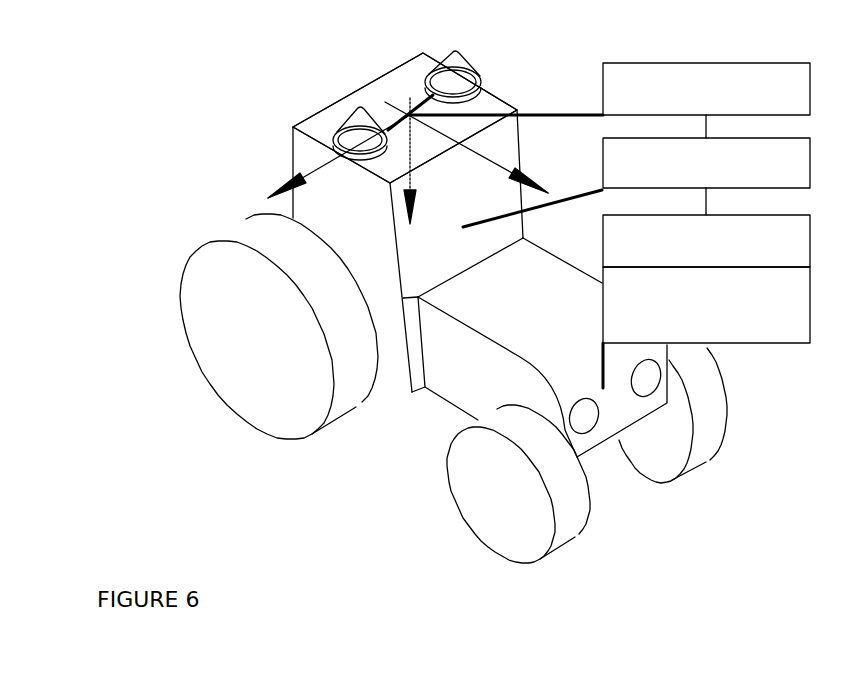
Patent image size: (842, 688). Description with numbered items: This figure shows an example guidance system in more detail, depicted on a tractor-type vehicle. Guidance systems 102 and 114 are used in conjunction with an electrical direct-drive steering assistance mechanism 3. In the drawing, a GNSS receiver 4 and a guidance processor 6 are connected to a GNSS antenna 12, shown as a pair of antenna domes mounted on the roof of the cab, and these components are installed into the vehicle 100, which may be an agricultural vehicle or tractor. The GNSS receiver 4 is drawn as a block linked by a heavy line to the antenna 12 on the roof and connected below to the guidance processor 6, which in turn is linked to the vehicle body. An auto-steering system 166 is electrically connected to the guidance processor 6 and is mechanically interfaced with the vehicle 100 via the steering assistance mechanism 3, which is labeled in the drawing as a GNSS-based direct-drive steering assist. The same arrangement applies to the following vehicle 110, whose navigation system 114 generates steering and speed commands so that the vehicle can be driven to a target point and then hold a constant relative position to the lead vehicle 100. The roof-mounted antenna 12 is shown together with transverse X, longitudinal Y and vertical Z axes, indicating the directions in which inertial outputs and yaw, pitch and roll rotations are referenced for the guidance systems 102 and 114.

The lead vehicle 100 is at (453, 308).
The following vehicle 110 is at (453, 308).
The guidance system 102 is at (339, 109).
The navigation system 114 is at (262, 68).
The GNSS antenna 12 is at (440, 66).
The GNSS receiver 4 is at (706, 100).
The guidance processor 6 is at (636, 182).
The auto-steering system 166 is at (706, 241).
The electrical direct-drive steering assistance mechanism 3 is at (706, 327).